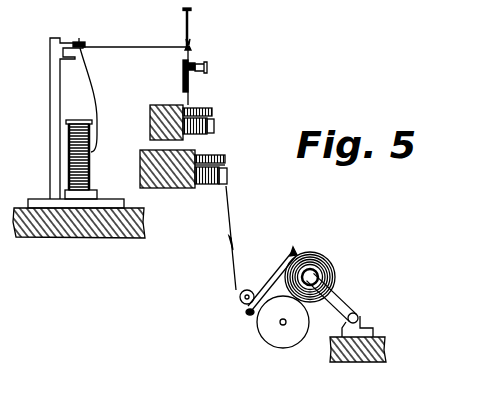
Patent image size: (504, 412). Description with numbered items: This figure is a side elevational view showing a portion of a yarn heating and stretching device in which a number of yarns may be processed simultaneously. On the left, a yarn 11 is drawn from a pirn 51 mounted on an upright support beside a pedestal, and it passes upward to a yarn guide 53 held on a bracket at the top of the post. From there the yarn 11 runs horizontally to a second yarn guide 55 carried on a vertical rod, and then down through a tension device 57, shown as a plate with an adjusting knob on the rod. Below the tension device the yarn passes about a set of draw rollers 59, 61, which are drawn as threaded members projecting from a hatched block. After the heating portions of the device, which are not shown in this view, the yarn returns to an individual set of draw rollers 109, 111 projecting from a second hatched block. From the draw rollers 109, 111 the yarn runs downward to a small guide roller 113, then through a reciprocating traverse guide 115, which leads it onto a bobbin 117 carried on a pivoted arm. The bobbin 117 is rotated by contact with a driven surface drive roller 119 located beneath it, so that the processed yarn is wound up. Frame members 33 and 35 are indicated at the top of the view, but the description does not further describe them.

The yarn 11 is at (137, 47).
The frame member 33 is at (348, 6).
The frame member 35 is at (245, 6).
The pirn 51 is at (91, 165).
The yarn guide 53 is at (82, 40).
The yarn guide 55 is at (195, 44).
The tension device 57 is at (198, 78).
The draw roller 59 is at (212, 108).
The draw roller 61 is at (214, 126).
The draw roller 109 is at (227, 175).
The draw roller 111 is at (224, 160).
The guide roller 113 is at (252, 289).
The reciprocating traverse guide 115 is at (294, 251).
The bobbin 117 is at (333, 278).
The driven surface drive roller 119 is at (286, 343).